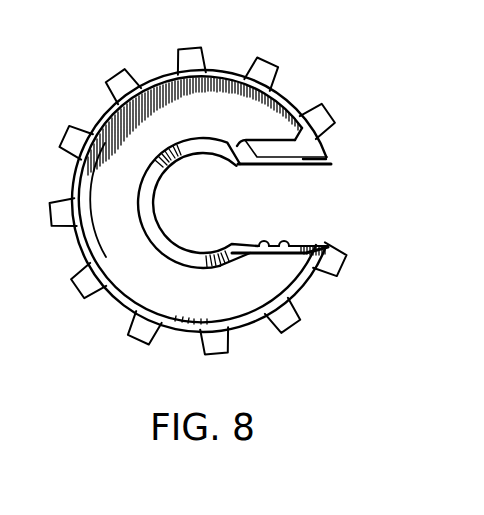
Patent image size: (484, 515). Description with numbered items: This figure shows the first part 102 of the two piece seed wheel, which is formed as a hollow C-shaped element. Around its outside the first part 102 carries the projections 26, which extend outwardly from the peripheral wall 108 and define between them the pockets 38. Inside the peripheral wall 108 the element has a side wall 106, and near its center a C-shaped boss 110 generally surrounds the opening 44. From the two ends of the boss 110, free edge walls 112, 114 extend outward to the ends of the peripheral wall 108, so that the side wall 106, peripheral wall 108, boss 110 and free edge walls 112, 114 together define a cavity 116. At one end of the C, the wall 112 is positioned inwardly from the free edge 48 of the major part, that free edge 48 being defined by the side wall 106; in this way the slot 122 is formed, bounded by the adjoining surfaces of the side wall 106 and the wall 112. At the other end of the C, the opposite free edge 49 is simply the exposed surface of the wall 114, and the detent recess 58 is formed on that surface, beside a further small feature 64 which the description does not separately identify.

The first part 102 is at (161, 58).
The projections 26 is at (194, 52).
The pockets 38 is at (235, 60).
The side wall 106 is at (137, 147).
The cavity 116 is at (130, 254).
The opening 44 is at (213, 206).
The C-shaped boss 110 is at (163, 250).
The peripheral wall 108 is at (270, 140).
The free edge wall 112 is at (287, 110).
The free edge 48 is at (310, 166).
The slot 122 is at (330, 159).
The free edge wall 114 is at (259, 242).
The detent recess 58 is at (258, 251).
The notch 64 is at (286, 251).
The opposite free edge 49 is at (311, 245).